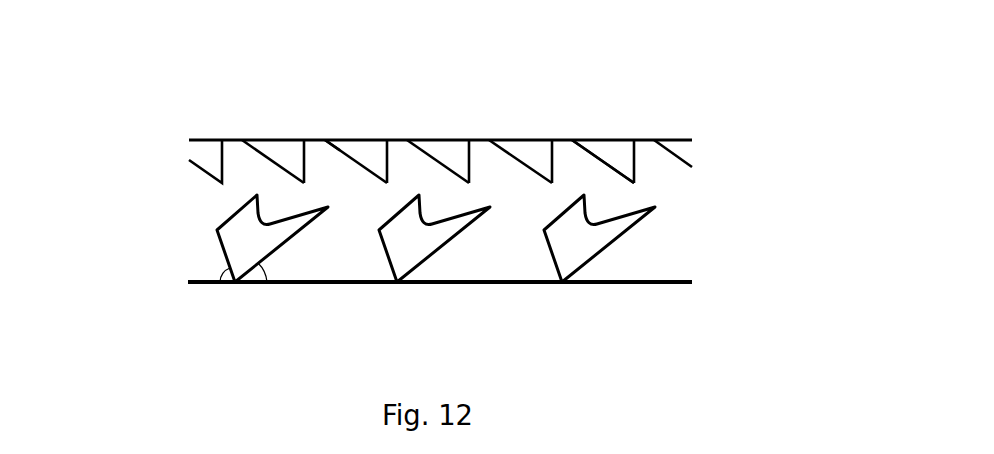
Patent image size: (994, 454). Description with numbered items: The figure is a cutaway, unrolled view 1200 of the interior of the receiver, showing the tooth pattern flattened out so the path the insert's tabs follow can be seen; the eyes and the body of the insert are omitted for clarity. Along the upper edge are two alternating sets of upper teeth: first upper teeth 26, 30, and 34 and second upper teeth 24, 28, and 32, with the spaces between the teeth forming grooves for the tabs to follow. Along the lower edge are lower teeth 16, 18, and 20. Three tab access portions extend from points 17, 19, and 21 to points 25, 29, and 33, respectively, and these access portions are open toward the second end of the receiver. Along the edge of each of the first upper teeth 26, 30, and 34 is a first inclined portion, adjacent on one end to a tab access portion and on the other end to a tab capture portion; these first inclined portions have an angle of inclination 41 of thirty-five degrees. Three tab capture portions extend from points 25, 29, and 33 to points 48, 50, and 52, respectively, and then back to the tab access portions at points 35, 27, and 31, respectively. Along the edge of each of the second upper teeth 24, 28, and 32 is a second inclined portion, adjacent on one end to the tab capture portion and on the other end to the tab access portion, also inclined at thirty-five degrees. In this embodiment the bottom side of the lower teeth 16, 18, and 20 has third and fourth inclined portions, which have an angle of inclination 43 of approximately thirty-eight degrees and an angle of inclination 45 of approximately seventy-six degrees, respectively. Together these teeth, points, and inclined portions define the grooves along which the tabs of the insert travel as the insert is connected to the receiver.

The cutaway unrolled view 1200 is at (119, 86).
The lower tooth 16 is at (241, 267).
The tab access portion start point 17 is at (333, 268).
The lower tooth 18 is at (403, 267).
The tab access portion start point 19 is at (491, 268).
The lower tooth 20 is at (568, 265).
The tab access portion start point 21 is at (657, 268).
The second upper tooth 24 is at (283, 152).
The tab access portion end point 25 is at (315, 154).
The first upper tooth 26 is at (363, 152).
The tab capture portion return point 27 is at (400, 154).
The second upper tooth 28 is at (443, 152).
The tab access portion end point 29 is at (480, 154).
The first upper tooth 30 is at (527, 152).
The tab capture portion return point 31 is at (560, 154).
The second upper tooth 32 is at (614, 152).
The tab access portion end point 33 is at (647, 154).
The first upper tooth 34 is at (201, 153).
The tab capture portion return point 35 is at (236, 154).
The angle of inclination 41 is at (329, 150).
The angle of inclination 43 is at (266, 272).
The angle of inclination 45 is at (218, 270).
The tab capture portion end point 48 is at (267, 219).
The tab capture portion end point 50 is at (429, 219).
The tab capture portion end point 52 is at (594, 219).